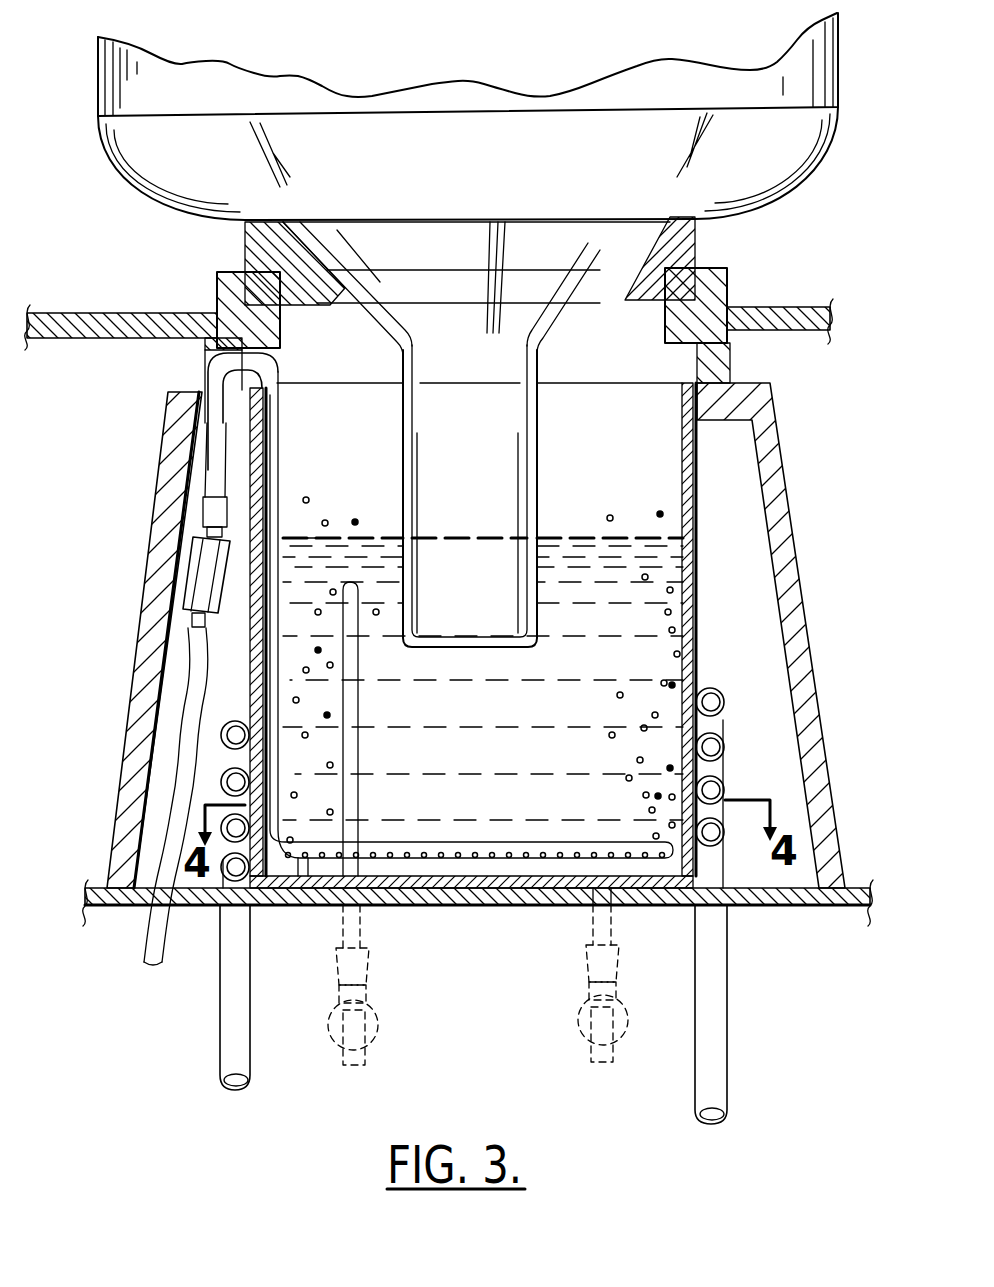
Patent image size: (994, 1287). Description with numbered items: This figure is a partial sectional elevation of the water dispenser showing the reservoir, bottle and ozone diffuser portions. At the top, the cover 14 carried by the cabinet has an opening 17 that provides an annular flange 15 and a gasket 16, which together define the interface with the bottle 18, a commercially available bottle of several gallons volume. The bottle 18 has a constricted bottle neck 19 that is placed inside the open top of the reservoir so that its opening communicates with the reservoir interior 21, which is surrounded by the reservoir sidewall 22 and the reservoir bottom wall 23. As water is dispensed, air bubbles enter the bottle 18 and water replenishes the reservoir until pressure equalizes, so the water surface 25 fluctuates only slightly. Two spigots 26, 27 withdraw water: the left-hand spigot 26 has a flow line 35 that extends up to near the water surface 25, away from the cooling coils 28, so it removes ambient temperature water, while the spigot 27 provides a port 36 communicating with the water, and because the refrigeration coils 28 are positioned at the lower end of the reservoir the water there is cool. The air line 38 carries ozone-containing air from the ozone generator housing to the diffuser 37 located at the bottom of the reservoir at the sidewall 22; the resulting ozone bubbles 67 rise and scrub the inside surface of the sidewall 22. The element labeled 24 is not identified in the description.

The cover 14 is at (100, 313).
The annular flange 15 is at (727, 287).
The gasket 16 is at (695, 240).
The opening 17 is at (610, 312).
The bottle 18 is at (835, 92).
The bottle neck 19 is at (403, 470).
The reservoir interior 21 is at (605, 472).
The reservoir sidewall 22 is at (697, 532).
The reservoir bottom wall 23 is at (535, 905).
The chamber 24 is at (590, 410).
The water surface 25 is at (563, 530).
The spigot 26 is at (350, 1042).
The spigot 27 is at (590, 1033).
The cooling coils 28 is at (728, 738).
The flow line 35 is at (360, 703).
The port 36 is at (607, 905).
The ozone diffuser 37 is at (418, 850).
The air line 38 is at (218, 470).
The ozone bubbles 67 is at (678, 654).